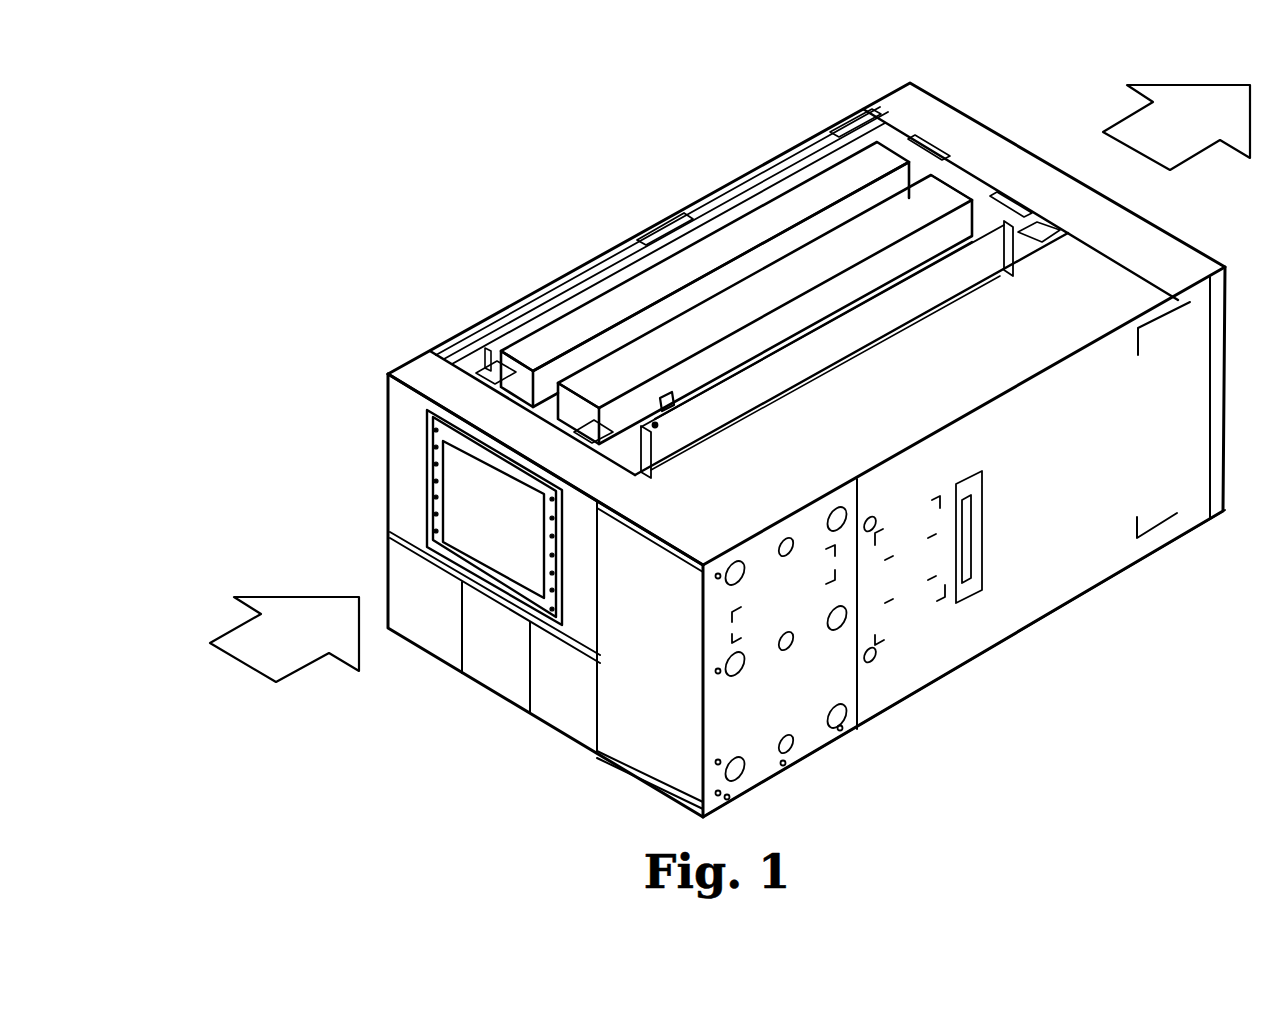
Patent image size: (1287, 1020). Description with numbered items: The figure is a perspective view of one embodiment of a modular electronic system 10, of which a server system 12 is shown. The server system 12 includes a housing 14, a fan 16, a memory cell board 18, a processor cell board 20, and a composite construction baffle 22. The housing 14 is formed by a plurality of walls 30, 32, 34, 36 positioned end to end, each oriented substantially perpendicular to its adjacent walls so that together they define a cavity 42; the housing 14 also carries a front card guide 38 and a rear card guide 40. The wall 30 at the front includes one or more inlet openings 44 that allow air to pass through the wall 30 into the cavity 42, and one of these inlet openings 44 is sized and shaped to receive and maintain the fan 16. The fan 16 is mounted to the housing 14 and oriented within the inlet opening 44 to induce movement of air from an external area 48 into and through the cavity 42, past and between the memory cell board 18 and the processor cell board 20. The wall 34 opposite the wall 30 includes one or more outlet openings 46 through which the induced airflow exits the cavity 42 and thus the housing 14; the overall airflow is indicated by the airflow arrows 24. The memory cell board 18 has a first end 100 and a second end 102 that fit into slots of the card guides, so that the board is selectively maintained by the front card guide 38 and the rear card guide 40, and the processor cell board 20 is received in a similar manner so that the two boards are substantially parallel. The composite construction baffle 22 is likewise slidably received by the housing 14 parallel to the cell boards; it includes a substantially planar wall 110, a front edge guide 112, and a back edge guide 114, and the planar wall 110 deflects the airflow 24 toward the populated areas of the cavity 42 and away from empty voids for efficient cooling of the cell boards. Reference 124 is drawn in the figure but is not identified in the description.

The electronic system 10 is at (409, 199).
The server system 12 is at (446, 304).
The housing 14 is at (1165, 250).
The fan 16 is at (467, 517).
The memory cell board 18 is at (903, 167).
The processor cell board 20 is at (940, 196).
The composite construction baffle 22 is at (930, 290).
The airflow arrows 24 is at (305, 644).
The wall 30 is at (427, 377).
The wall 32 is at (652, 245).
The wall 34 is at (1012, 155).
The wall 36 is at (1125, 235).
The front card guide 38 is at (541, 410).
The rear card guide 40 is at (1050, 215).
The cavity 42 is at (487, 357).
The inlet openings 44 is at (427, 460).
The outlet openings 46 is at (945, 195).
The external area 48 is at (475, 770).
The first end 100 is at (562, 332).
The second end 102 is at (866, 153).
The planar wall 110 is at (870, 323).
The front edge guide 112 is at (646, 452).
The back edge guide 114 is at (1018, 259).
The plate 124 is at (795, 340).